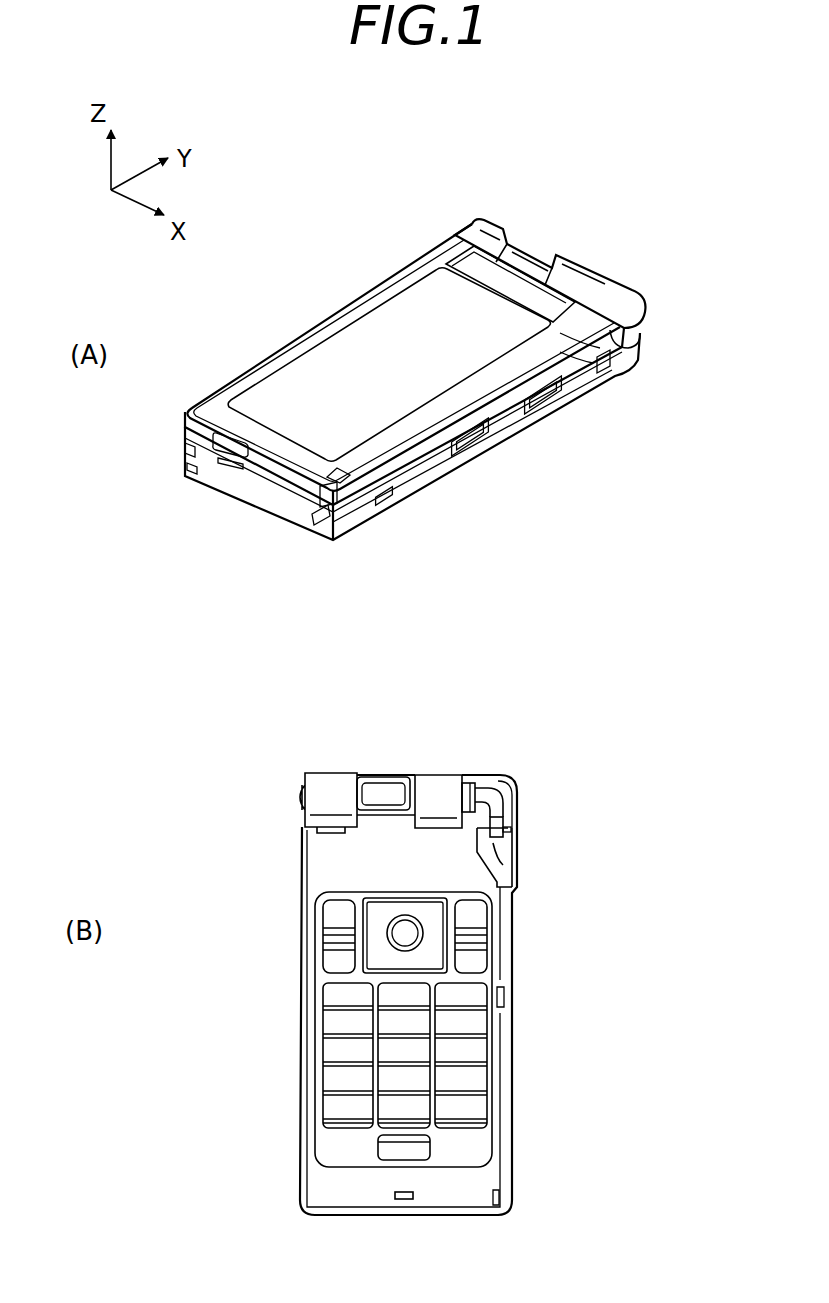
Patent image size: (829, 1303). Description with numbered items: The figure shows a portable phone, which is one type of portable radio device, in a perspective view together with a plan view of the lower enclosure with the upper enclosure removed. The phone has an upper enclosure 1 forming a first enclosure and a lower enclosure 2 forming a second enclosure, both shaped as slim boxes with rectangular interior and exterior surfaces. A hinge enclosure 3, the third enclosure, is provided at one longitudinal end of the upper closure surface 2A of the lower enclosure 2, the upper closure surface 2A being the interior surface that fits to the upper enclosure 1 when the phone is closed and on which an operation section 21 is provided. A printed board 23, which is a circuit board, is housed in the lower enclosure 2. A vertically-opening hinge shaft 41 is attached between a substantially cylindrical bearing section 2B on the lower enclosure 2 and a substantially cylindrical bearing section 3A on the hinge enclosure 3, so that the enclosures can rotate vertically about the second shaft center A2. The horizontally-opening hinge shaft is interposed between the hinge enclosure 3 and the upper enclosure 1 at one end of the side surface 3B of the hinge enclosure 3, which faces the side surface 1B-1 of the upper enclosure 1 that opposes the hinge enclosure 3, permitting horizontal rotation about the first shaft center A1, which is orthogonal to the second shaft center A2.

The upper enclosure 1 is at (480, 380).
The side surface opposing the hinge enclosure 1B-1 is at (479, 272).
The lower enclosure 2 is at (436, 465).
The upper closure surface 2A is at (340, 867).
The bearing section 2B is at (503, 227).
The hinge enclosure 3 is at (467, 218).
The bearing section 3A is at (538, 240).
The side surface opposing the upper enclosure 3B is at (500, 318).
The operation section 21 is at (478, 1054).
The printed board 23 is at (405, 1200).
The vertically-opening hinge shaft 41 is at (388, 816).
The first shaft center A1 is at (350, 466).
The second shaft center A2 is at (648, 312).